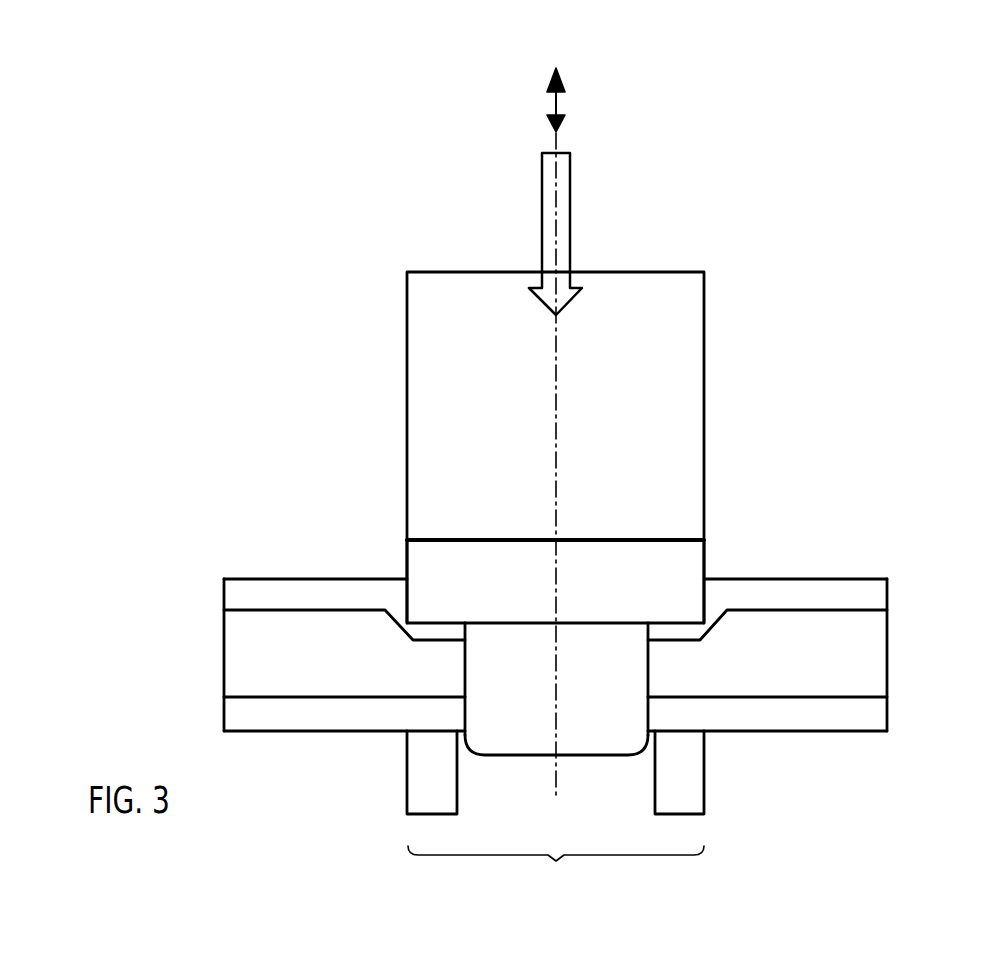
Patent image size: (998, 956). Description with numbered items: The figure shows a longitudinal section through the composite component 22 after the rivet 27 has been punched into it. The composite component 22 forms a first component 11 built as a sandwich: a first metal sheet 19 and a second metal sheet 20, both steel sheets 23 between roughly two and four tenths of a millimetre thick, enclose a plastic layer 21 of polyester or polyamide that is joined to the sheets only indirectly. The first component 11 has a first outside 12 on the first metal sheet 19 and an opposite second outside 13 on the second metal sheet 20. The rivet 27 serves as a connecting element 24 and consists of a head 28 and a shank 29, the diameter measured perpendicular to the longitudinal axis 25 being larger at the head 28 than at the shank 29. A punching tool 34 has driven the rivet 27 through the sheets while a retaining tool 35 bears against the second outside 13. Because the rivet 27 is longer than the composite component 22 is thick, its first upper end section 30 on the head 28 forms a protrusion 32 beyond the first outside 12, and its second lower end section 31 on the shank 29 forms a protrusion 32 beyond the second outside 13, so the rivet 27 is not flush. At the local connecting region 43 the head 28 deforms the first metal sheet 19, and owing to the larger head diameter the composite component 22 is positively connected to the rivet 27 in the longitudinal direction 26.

The first component 11 is at (500, 655).
The composite component 22 is at (500, 655).
The first outside 12 is at (272, 562).
The second outside 13 is at (273, 745).
The first metal sheet 19 is at (235, 598).
The second metal sheet 20 is at (235, 717).
The plastic layer 21 is at (235, 645).
The steel sheets 23 is at (553, 658).
The connecting element 24 is at (614, 637).
The rivet 27 is at (614, 637).
The head 28 is at (688, 558).
The shank 29 is at (633, 673).
The first upper end section 30 is at (480, 550).
The second lower end section 31 is at (523, 750).
The protrusion 32 is at (521, 606).
The punching tool 34 is at (688, 377).
The retaining tool 35 is at (408, 775).
The longitudinal axis 25 is at (556, 785).
The longitudinal direction 26 is at (582, 458).
The local connecting region 43 is at (556, 870).